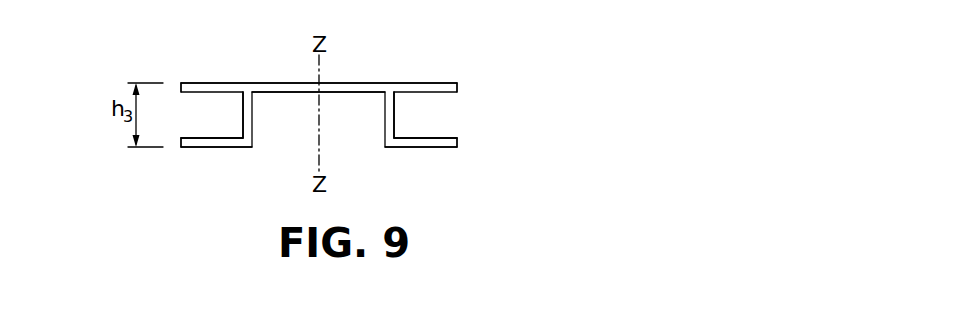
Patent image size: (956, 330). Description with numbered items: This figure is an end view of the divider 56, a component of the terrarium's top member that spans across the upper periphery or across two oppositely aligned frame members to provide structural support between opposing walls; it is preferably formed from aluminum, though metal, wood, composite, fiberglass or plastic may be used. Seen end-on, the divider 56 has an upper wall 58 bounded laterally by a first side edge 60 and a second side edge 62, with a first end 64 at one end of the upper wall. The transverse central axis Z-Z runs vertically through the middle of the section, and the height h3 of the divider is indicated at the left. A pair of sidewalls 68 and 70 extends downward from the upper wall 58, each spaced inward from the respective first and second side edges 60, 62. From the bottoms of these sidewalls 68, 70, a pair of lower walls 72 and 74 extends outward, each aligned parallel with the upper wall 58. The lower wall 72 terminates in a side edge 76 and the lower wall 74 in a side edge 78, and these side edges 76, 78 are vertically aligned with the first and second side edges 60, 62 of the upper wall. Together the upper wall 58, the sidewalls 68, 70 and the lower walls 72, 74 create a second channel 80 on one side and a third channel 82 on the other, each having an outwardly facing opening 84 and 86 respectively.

The divider 56 is at (540, 52).
The upper wall 58 is at (252, 83).
The first side edge 60 is at (182, 91).
The second side edge 62 is at (458, 89).
The first end 64 is at (342, 86).
The sidewall 68 is at (243, 110).
The sidewall 70 is at (396, 111).
The lower wall 72 is at (215, 148).
The lower wall 74 is at (418, 148).
The side edge 76 is at (180, 146).
The side edge 78 is at (458, 144).
The second channel 80 is at (182, 106).
The third channel 82 is at (460, 118).
The outwardly facing opening 84 is at (185, 123).
The outwardly facing opening 86 is at (453, 102).